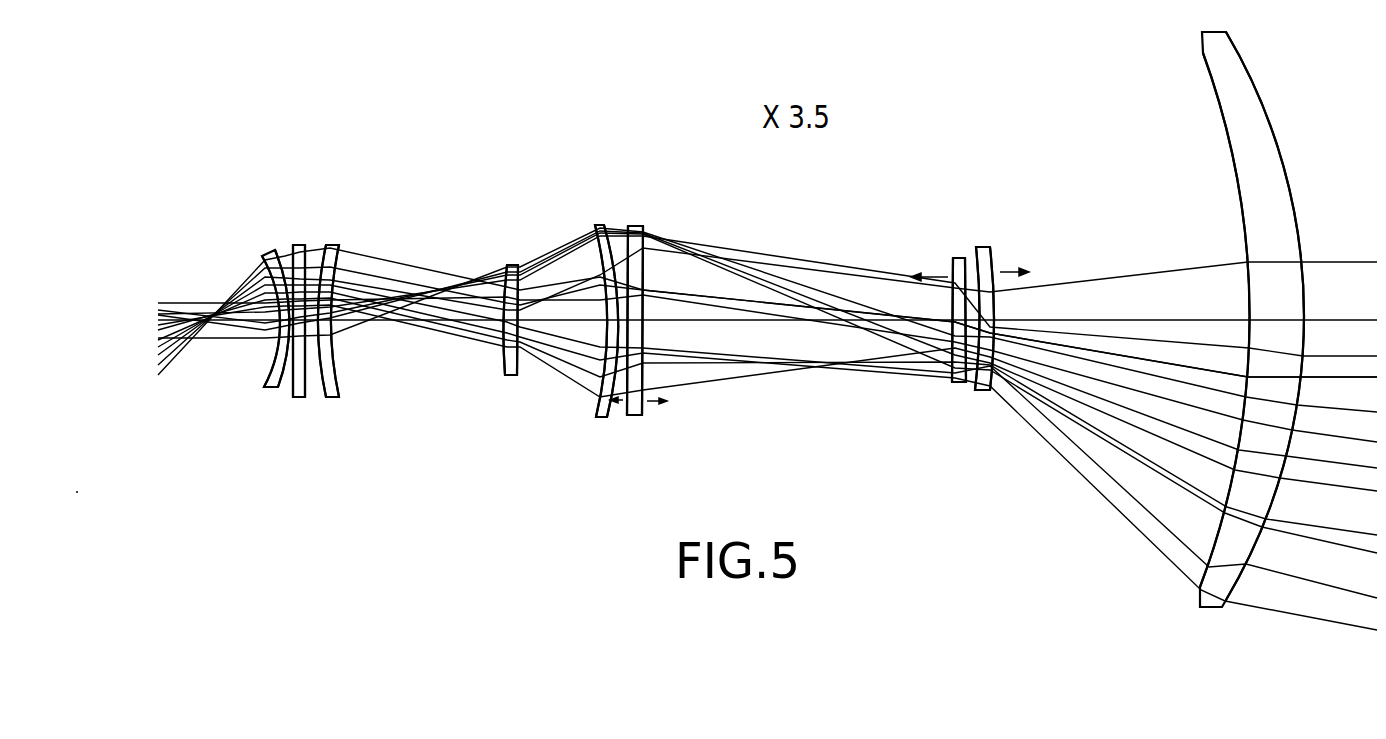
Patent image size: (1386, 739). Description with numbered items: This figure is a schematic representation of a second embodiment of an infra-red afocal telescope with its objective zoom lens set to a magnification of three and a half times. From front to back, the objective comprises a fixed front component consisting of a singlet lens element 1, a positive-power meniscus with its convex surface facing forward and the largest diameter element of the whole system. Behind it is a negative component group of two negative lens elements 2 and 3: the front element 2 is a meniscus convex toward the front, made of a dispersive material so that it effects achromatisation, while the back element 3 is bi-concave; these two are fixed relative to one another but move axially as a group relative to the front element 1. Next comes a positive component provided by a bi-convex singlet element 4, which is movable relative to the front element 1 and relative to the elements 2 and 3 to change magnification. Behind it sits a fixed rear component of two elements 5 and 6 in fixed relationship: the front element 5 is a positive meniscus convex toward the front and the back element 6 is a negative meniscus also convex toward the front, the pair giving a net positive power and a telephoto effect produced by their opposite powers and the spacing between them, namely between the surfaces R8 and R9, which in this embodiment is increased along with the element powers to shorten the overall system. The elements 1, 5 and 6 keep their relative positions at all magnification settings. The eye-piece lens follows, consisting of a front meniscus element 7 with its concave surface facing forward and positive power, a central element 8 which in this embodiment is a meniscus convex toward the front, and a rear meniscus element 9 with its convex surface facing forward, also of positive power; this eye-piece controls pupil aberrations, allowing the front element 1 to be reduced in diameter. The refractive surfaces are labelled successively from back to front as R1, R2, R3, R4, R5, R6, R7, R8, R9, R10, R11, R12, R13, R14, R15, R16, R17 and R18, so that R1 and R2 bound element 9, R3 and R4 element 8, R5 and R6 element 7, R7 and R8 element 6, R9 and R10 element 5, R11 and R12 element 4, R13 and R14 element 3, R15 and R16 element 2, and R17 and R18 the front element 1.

The singlet lens element 1 is at (1222, 88).
The front negative lens element 2 is at (990, 249).
The back negative lens element 3 is at (958, 257).
The bi-convex singlet element 4 is at (645, 228).
The front element of rear component 5 is at (599, 225).
The back element of rear component 6 is at (513, 264).
The front meniscus element 7 is at (335, 245).
The central element 8 is at (298, 245).
The rear meniscus element 9 is at (265, 253).
The refractive surface R1 is at (265, 386).
The refractive surface R2 is at (278, 388).
The refractive surface R3 is at (294, 398).
The refractive surface R4 is at (305, 398).
The refractive surface R5 is at (327, 398).
The refractive surface R6 is at (340, 397).
The refractive surface R7 is at (505, 376).
The refractive surface R8 is at (518, 376).
The refractive surface R9 is at (596, 417).
The refractive surface R10 is at (606, 418).
The refractive surface R11 is at (628, 416).
The refractive surface R12 is at (642, 416).
The refractive surface R13 is at (953, 383).
The refractive surface R14 is at (965, 383).
The refractive surface R15 is at (976, 391).
The refractive surface R16 is at (991, 392).
The refractive surface R17 is at (1207, 572).
The refractive surface R18 is at (1235, 582).